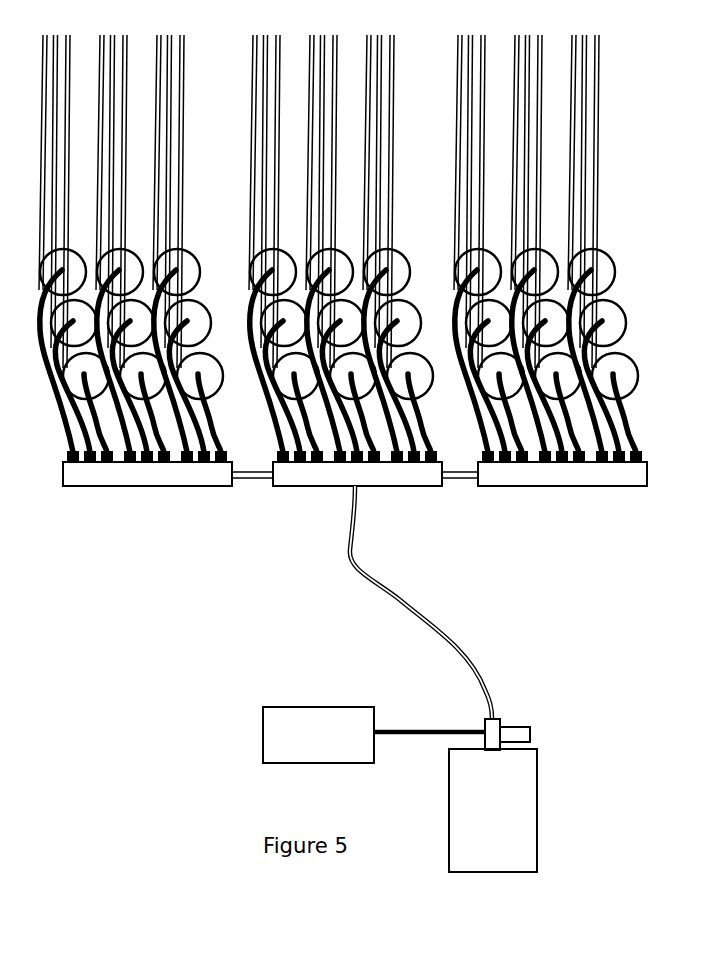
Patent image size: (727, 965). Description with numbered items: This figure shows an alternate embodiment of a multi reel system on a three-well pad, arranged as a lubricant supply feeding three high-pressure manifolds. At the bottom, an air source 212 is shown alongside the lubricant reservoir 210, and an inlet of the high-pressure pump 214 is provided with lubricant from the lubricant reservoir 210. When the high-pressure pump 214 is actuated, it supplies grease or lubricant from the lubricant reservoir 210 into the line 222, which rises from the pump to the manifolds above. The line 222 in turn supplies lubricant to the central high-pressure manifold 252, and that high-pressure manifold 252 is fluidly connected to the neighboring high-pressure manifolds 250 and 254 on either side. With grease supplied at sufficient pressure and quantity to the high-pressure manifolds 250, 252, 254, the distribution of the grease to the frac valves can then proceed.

The high-pressure manifold 250 is at (102, 476).
The high-pressure manifold 252 is at (304, 476).
The high-pressure manifold 254 is at (590, 475).
The line 222 is at (428, 620).
The high-pressure pump 214 is at (497, 720).
The lubricant reservoir 210 is at (517, 773).
The air source 212 is at (270, 722).